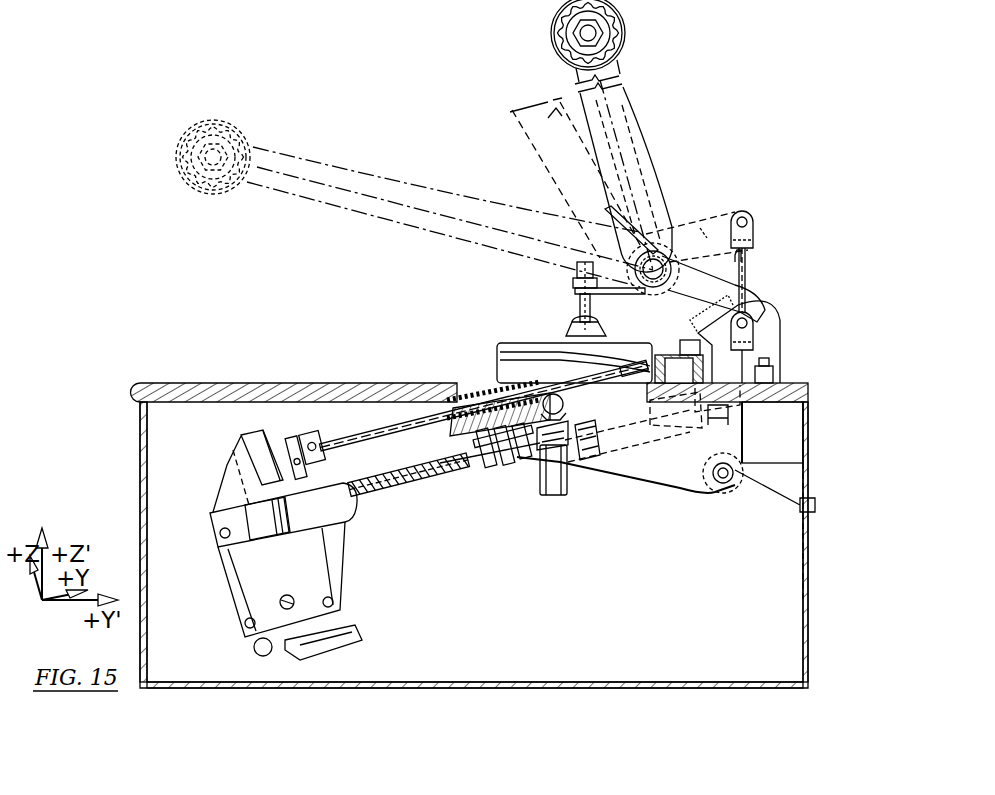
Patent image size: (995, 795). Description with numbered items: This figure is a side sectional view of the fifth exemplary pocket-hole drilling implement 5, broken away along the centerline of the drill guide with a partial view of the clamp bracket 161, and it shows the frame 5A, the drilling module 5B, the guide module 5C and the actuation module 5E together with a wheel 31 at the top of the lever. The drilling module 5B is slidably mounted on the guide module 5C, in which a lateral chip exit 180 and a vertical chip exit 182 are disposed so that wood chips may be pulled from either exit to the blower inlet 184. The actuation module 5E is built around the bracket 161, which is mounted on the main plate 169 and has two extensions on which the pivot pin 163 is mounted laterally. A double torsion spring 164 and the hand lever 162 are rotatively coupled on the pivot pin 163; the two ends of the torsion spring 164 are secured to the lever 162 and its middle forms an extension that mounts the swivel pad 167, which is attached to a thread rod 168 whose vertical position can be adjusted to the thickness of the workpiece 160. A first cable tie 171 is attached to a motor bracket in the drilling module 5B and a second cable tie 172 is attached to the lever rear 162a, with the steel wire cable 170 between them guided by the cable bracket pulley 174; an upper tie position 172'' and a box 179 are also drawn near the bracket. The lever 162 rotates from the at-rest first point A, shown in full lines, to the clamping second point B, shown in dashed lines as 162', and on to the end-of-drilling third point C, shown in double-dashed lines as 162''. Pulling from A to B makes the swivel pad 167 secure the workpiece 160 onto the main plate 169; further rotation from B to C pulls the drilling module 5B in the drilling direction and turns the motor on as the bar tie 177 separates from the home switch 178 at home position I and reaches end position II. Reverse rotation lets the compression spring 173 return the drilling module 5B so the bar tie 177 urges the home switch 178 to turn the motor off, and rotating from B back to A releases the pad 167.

The pocket-hole drilling implement 5 is at (122, 366).
The frame 5A is at (135, 462).
The drilling module 5B is at (340, 580).
The guide module 5C is at (468, 496).
The actuation module 5E is at (690, 176).
The wheel 31 is at (617, 48).
The workpiece 160 is at (498, 372).
The bracket 161 is at (780, 362).
The lever 162 is at (651, 166).
The lever at second point 162' is at (551, 177).
The lever at third point 162'' is at (414, 203).
The lever rear 162a is at (740, 297).
The pivot pin 163 is at (668, 262).
The torsion spring 164 is at (604, 210).
The swivel pad 167 is at (575, 332).
The thread rod 168 is at (575, 291).
The main plate 169 is at (473, 380).
The steel wire cable 170 is at (665, 492).
The first cable tie 171 is at (348, 523).
The second cable tie 172 is at (790, 315).
The upper clevis 172'' is at (787, 212).
The compression spring 173 is at (440, 490).
The cable bracket pulley 174 is at (728, 482).
The bar tie 177 is at (597, 455).
The home switch 178 is at (540, 449).
The box 179 is at (748, 420).
The lateral chip exit 180 is at (567, 412).
The vertical chip exit 182 is at (558, 492).
The blower inlet 184 is at (355, 640).
The first point A is at (607, 112).
The second point B is at (571, 136).
The third point C is at (488, 235).
The home position I is at (615, 460).
The end position II is at (690, 442).